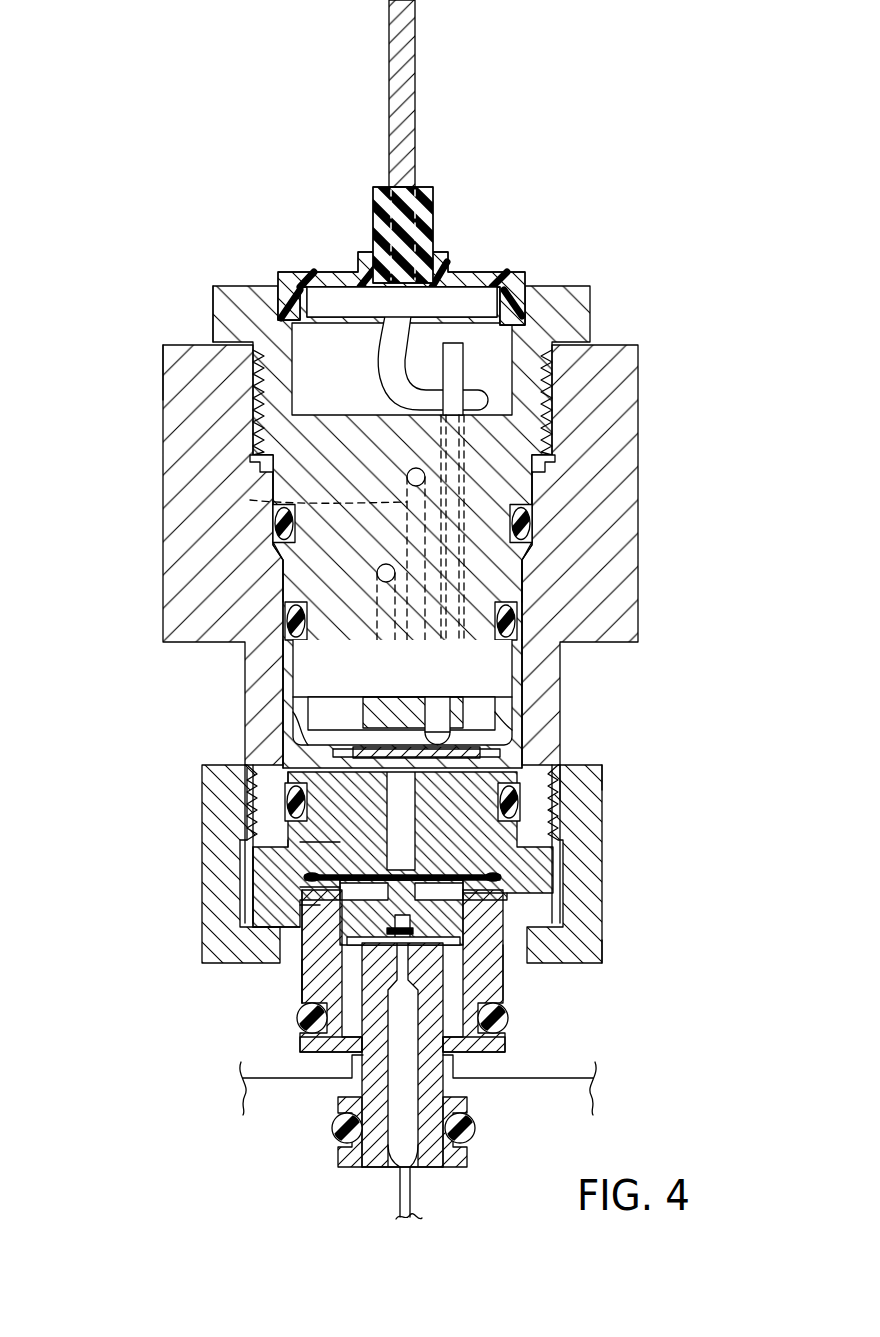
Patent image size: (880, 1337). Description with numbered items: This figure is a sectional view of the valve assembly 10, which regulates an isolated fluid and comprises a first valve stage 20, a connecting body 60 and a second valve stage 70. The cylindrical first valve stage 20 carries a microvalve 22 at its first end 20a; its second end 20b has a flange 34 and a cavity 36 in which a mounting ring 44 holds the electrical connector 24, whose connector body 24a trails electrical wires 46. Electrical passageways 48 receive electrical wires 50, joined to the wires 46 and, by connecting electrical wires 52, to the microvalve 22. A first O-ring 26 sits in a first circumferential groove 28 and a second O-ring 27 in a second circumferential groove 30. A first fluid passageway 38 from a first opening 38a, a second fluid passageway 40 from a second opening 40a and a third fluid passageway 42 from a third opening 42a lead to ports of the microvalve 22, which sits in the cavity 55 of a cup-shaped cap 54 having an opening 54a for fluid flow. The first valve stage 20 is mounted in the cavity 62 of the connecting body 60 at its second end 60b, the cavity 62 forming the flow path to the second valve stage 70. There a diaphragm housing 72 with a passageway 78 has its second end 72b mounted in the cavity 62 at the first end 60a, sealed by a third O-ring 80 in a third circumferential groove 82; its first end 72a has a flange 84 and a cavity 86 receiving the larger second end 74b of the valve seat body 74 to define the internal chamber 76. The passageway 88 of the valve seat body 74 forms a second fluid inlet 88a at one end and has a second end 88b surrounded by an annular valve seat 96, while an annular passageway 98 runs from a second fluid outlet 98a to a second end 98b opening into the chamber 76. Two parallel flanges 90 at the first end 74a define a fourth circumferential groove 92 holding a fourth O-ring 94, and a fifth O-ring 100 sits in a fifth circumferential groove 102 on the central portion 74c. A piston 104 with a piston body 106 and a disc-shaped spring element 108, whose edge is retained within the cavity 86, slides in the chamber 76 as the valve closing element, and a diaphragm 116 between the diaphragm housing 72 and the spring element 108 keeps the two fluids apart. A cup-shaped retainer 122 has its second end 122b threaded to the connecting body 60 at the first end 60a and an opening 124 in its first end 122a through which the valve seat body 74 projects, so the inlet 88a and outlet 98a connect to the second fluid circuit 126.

The valve assembly 10 is at (200, 95).
The first valve stage 20 is at (212, 283).
The first end 20a is at (522, 690).
The second end 20b is at (213, 315).
The microvalve 22 is at (285, 722).
The electrical connector 24 is at (340, 163).
The connector body 24a is at (373, 207).
The first O-ring 26 is at (522, 523).
The second O-ring 27 is at (507, 620).
The first circumferential groove 28 is at (278, 524).
The second circumferential groove 30 is at (297, 618).
The flange 34 is at (590, 292).
The cavity 36 is at (488, 397).
The first fluid passageway 38 is at (378, 615).
The first opening 38a is at (377, 582).
The second fluid passageway 40 is at (265, 482).
The second opening 40a is at (407, 478).
The third fluid passageway 42 is at (300, 690).
The third opening 42a is at (377, 647).
The mounting ring 44 is at (300, 270).
The electrical wires 46 is at (415, 42).
The electrical passageways 48 is at (553, 462).
The electrical wires 50 is at (462, 372).
The connecting electrical wires 52 is at (488, 710).
The cap 54 is at (527, 745).
The opening 54a is at (300, 745).
The cavity 55 is at (362, 712).
The connecting body 60 is at (640, 440).
The first end 60a is at (562, 848).
The second end 60b is at (165, 355).
The cavity 62 is at (530, 585).
The second valve stage 70 is at (753, 764).
The diaphragm housing 72 is at (566, 863).
The first end 72a is at (255, 866).
The second end 72b is at (286, 790).
The valve seat body 74 is at (509, 990).
The first end 74a is at (467, 1160).
The second end 74b is at (492, 878).
The central portion 74c is at (505, 975).
The internal chamber 76 is at (280, 935).
The passageway 78 is at (485, 753).
The third O-ring 80 is at (392, 800).
The third circumferential groove 82 is at (256, 813).
The flange 84 is at (290, 800).
The cavity 86 is at (300, 887).
The passageway 88 is at (396, 1166).
The second fluid inlet 88a is at (413, 1170).
The second end 88b is at (414, 933).
The flanges 90 is at (338, 1152).
The fourth circumferential groove 92 is at (334, 1118).
The fourth O-ring 94 is at (476, 1125).
The annular valve seat 96 is at (468, 916).
The annular passageway 98 is at (350, 1056).
The second fluid outlet 98a is at (455, 1056).
The second end 98b is at (322, 996).
The fifth O-ring 100 is at (510, 1022).
The fifth circumferential groove 102 is at (298, 1022).
The piston 104 is at (505, 898).
The piston body 106 is at (340, 975).
The spring element 108 is at (300, 905).
The diaphragm 116 is at (340, 842).
The retainer 122 is at (597, 820).
The first end 122a is at (600, 962).
The second end 122b is at (598, 772).
The opening 124 is at (302, 966).
The second fluid circuit 126 is at (398, 1192).